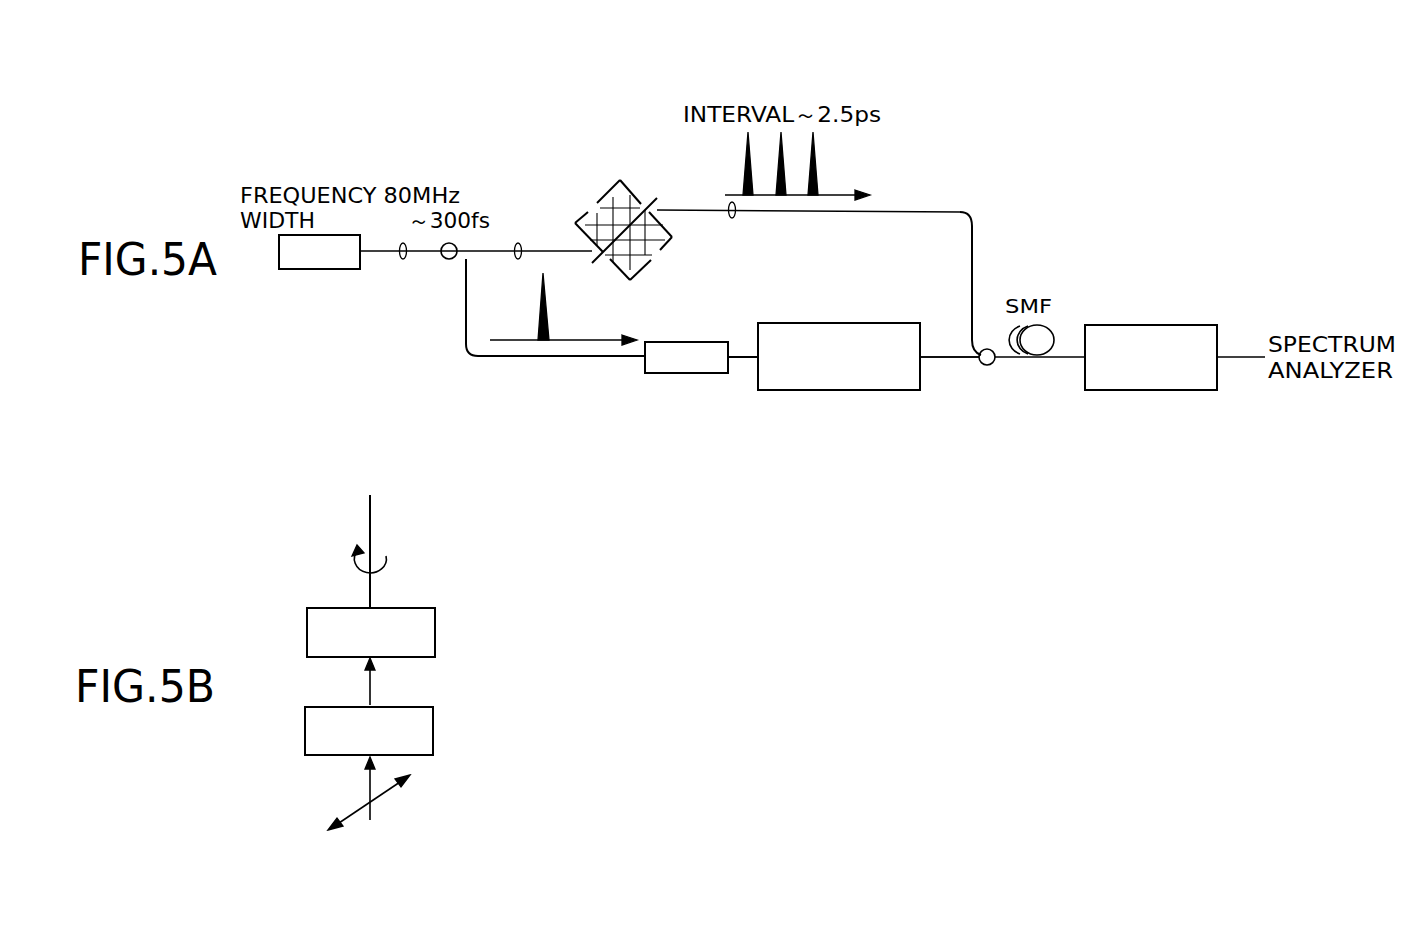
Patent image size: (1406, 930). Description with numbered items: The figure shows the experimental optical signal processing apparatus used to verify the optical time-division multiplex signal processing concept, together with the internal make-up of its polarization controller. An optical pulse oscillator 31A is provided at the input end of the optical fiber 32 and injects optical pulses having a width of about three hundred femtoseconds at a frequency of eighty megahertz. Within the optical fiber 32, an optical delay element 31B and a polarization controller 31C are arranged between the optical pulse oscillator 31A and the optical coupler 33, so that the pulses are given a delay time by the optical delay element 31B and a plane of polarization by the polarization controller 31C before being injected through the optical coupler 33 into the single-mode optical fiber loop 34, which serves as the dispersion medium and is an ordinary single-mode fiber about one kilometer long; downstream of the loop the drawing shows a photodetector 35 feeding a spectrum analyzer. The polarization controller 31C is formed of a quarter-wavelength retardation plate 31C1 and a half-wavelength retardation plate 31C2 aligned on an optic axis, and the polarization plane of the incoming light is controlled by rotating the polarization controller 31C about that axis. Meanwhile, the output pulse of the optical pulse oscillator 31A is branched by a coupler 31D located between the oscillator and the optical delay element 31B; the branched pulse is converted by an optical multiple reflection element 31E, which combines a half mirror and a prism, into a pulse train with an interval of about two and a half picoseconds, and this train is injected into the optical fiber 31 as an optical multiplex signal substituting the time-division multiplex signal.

In FIG. 5A, the optical fiber 31 is at (953, 210).
In FIG. 5A, the optical pulse oscillator 31A is at (343, 271).
In FIG. 5A, the optical delay element 31B is at (706, 375).
In FIG. 5A, the polarization controller 31C is at (888, 392).
In FIG. 5B, the quarter-wavelength retardation plate 31C1 is at (437, 733).
In FIG. 5B, the half-wavelength retardation plate 31C2 is at (437, 634).
In FIG. 5A, the coupler 31D is at (447, 261).
In FIG. 5A, the optical multiple reflection element 31E is at (616, 182).
In FIG. 5A, the optical fiber 32 is at (940, 364).
In FIG. 5A, the optical coupler 33 is at (987, 366).
In FIG. 5A, the single-mode optical fiber loop 34 is at (1052, 336).
In FIG. 5A, the photodetector (PD) 35 is at (1151, 392).